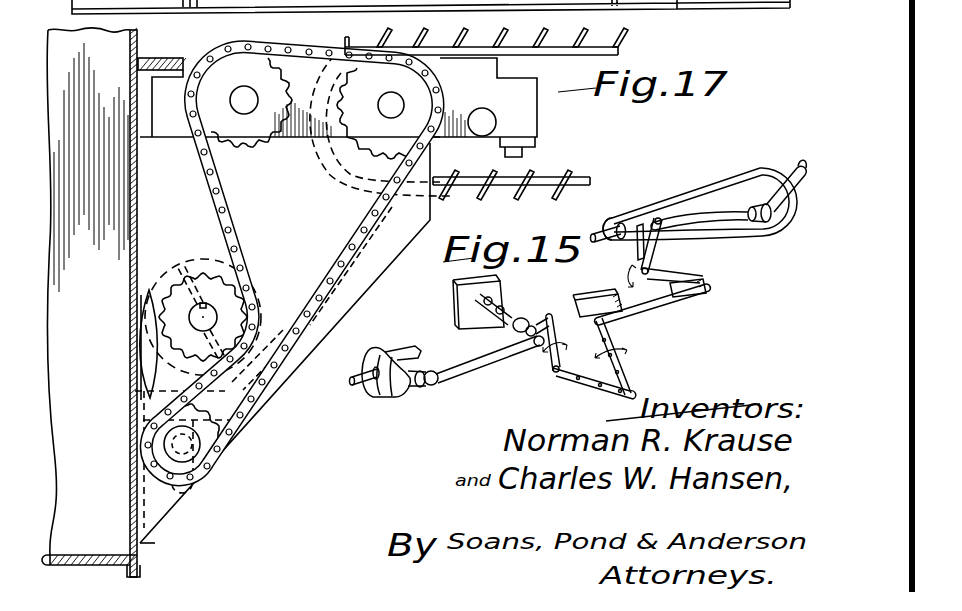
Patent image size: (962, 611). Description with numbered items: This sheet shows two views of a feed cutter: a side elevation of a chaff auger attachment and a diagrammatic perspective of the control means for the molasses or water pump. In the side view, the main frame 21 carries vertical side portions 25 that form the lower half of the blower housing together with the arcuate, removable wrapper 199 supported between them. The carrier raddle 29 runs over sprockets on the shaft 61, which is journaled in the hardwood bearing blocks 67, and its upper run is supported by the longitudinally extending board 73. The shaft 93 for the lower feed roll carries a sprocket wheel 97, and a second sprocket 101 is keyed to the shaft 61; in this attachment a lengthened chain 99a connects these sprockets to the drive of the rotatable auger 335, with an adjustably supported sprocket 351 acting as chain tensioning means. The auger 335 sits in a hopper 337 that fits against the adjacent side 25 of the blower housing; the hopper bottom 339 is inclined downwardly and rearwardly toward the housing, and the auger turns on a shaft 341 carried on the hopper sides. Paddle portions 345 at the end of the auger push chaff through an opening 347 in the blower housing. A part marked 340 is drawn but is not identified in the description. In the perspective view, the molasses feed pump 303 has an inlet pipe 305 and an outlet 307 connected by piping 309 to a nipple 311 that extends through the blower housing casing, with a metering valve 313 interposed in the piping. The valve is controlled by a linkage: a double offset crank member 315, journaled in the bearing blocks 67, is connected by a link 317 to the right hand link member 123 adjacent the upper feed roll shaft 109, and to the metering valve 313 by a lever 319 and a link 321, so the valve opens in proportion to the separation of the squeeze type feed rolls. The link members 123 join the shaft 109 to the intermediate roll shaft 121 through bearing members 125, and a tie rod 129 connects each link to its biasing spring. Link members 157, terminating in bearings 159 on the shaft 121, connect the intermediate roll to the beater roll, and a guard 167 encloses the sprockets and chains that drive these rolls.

In FIG. 17, the main frame 21 is at (158, 58).
In FIG. 17, the vertical side portion 25 is at (141, 527).
In FIG. 17, the carrier raddle 29 is at (553, 47).
In FIG. 17, the sprocket shaft 61 is at (392, 100).
In FIG. 17, the bearing block 67 is at (517, 106).
In FIG. 15, the bearing block 67 is at (690, 296).
In FIG. 17, the longitudinally extending board 73 is at (556, 52).
In FIG. 17, the shaft 93 is at (254, 84).
In FIG. 17, the sprocket wheel 97 is at (246, 138).
In FIG. 17, the chain 99a is at (217, 193).
In FIG. 17, the second sprocket 101 is at (372, 140).
In FIG. 15, the upper feed roll shaft 109 is at (606, 233).
In FIG. 15, the supporting shaft 121 is at (752, 225).
In FIG. 15, the link member 123 is at (695, 215).
In FIG. 15, the bearing member 125 is at (617, 210).
In FIG. 15, the tie rod 129 is at (634, 254).
In FIG. 15, the link member 157 is at (801, 163).
In FIG. 15, the bearing 159 is at (778, 180).
In FIG. 15, the guard 167 is at (758, 165).
In FIG. 17, the arcuate removable wrapper 199 is at (65, 566).
In FIG. 15, the molasses feed pump 303 is at (395, 389).
In FIG. 15, the inlet pipe 305 is at (356, 378).
In FIG. 15, the outlet 307 is at (426, 370).
In FIG. 15, the piping 309 is at (511, 314).
In FIG. 15, the nipple 311 is at (485, 300).
In FIG. 15, the metering valve 313 is at (531, 314).
In FIG. 17, the double offset crank member 315 is at (483, 128).
In FIG. 15, the double offset crank member 315 is at (647, 304).
In FIG. 15, the link 317 is at (657, 259).
In FIG. 15, the lever 319 is at (559, 358).
In FIG. 15, the link 321 is at (595, 385).
In FIG. 17, the rotatable auger 335 is at (143, 328).
In FIG. 17, the hopper 337 is at (363, 290).
In FIG. 17, the hopper bottom 339 is at (277, 340).
In FIG. 17, the pitch circle (dashed) 340 is at (167, 302).
In FIG. 17, the shaft 341 is at (200, 320).
In FIG. 17, the paddle portion 345 is at (178, 264).
In FIG. 17, the opening 347 is at (134, 372).
In FIG. 17, the adjustably supported sprocket 351 is at (207, 453).